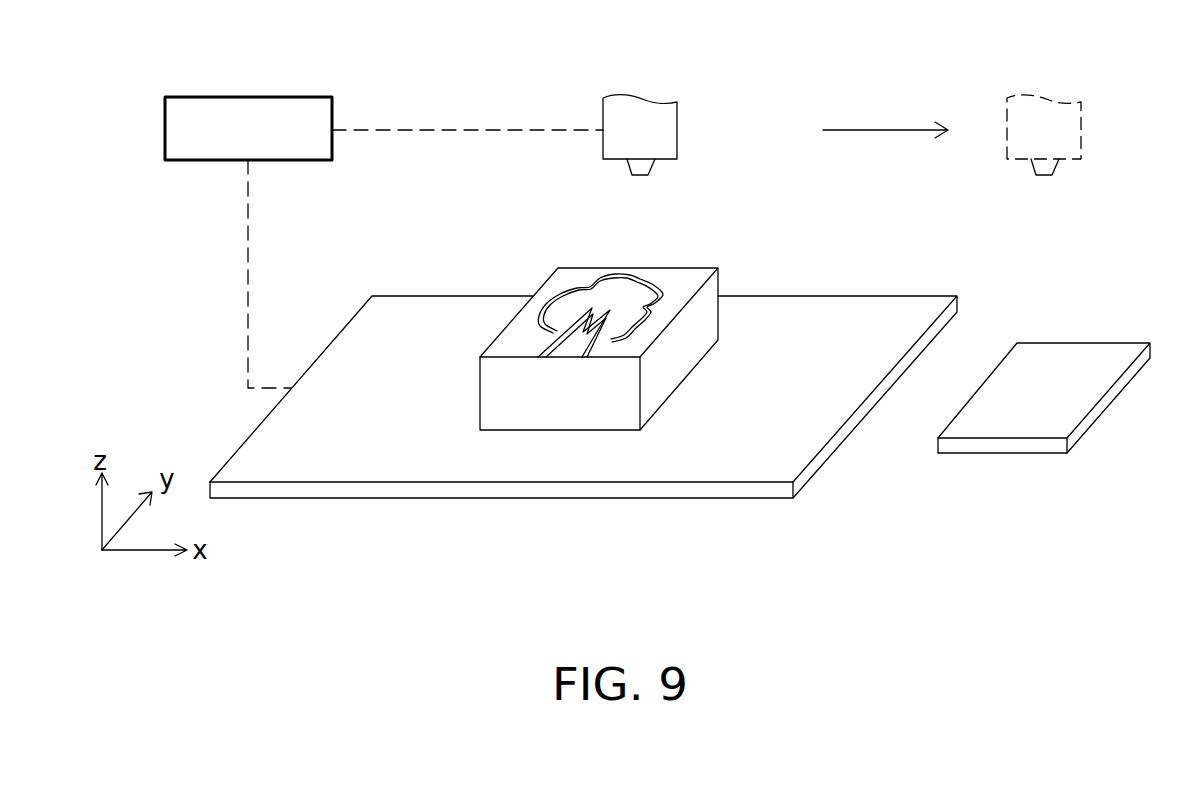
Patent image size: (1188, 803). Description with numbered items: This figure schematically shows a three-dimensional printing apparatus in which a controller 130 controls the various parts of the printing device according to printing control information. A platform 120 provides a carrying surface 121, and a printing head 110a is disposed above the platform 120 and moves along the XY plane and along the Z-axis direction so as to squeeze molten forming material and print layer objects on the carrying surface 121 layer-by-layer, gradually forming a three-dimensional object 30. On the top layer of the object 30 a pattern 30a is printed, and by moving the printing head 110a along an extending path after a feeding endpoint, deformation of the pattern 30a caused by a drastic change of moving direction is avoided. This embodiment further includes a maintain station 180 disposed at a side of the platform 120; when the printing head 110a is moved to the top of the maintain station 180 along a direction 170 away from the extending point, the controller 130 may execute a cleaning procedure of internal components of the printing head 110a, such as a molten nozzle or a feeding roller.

The controller 130 is at (273, 97).
The printing head 110a is at (677, 130).
The direction 170 is at (883, 130).
The platform 120 is at (683, 492).
The carrying surface 121 is at (812, 323).
The 3D object 30 is at (688, 275).
The pattern 30a is at (560, 297).
The maintain station 180 is at (993, 445).